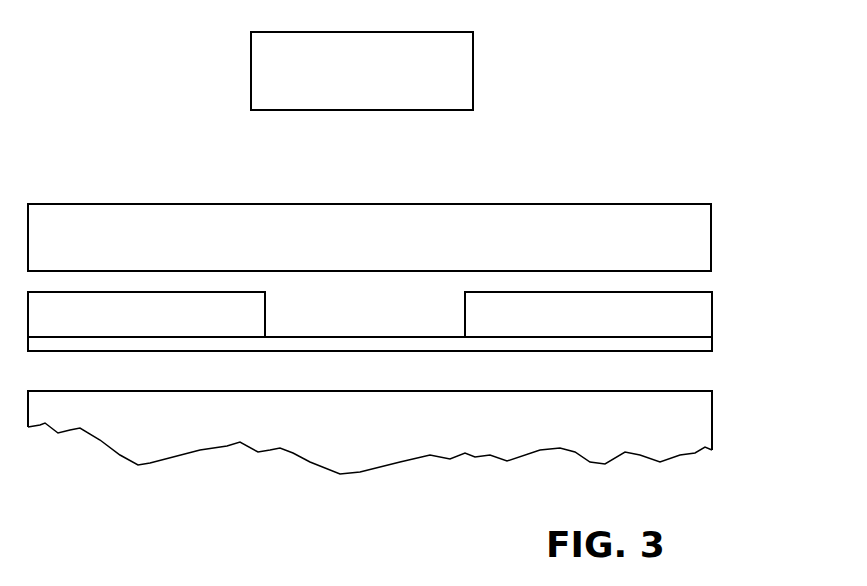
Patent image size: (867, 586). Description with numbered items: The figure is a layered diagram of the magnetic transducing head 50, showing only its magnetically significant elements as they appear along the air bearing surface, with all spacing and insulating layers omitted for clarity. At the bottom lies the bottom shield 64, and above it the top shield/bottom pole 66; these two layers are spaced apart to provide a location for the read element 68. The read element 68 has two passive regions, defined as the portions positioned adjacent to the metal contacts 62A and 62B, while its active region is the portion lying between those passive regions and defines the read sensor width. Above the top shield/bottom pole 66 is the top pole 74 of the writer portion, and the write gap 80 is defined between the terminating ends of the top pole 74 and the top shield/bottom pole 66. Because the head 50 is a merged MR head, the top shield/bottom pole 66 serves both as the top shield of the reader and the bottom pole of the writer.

The magnetic transducing head 50 is at (638, 141).
The top pole 74 is at (374, 77).
The write gap 80 is at (506, 113).
The top shield/bottom pole 66 is at (377, 249).
The metal contact 62A is at (212, 325).
The metal contact 62B is at (603, 327).
The read element 68 is at (698, 347).
The bottom shield 64 is at (384, 438).